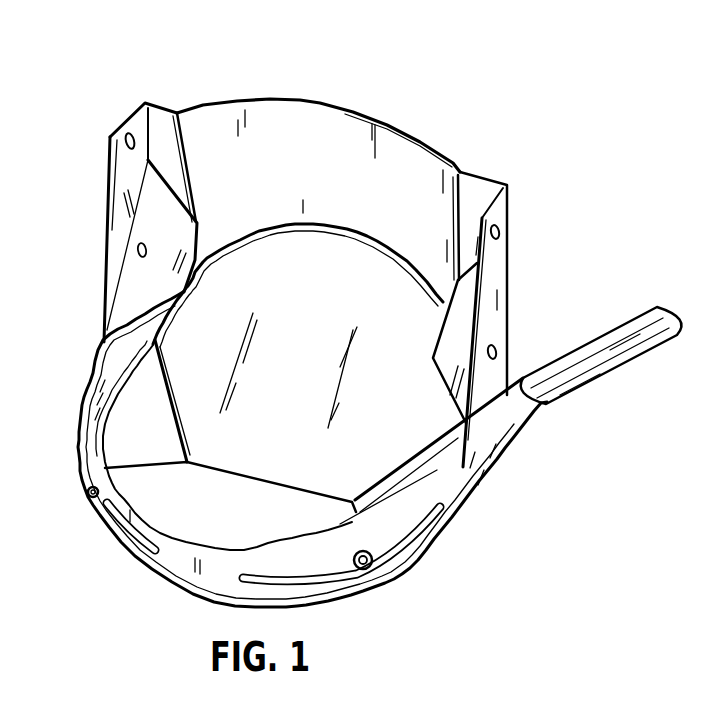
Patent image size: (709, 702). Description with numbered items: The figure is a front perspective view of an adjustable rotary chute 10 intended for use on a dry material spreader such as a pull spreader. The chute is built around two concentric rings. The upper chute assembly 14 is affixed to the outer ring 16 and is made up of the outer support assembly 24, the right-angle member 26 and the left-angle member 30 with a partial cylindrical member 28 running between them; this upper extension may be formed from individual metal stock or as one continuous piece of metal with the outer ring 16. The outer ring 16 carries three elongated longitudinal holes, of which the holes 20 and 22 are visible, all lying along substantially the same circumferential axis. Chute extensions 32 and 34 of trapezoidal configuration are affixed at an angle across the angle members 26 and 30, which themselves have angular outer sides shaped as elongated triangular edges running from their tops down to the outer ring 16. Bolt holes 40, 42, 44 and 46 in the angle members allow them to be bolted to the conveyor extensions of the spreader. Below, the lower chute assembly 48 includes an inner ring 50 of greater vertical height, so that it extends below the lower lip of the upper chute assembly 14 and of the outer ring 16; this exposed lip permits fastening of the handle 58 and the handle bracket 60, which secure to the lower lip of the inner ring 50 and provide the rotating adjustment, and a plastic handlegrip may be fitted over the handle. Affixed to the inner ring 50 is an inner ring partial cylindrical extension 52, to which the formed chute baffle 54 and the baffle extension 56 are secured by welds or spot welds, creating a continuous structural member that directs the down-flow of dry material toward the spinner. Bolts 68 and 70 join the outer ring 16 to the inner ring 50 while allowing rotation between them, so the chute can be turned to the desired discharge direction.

The adjustable rotary chute 10 is at (452, 58).
The upper chute assembly 14 is at (234, 223).
The outer ring 16 is at (400, 530).
The elongated longitudinal hole 20 is at (132, 548).
The elongated longitudinal hole 22 is at (340, 577).
The outer support assembly 24 is at (293, 99).
The right-angle member 26 is at (172, 140).
The partial cylindrical member 28 is at (317, 202).
The left-angle member 30 is at (485, 204).
The chute extension 32 is at (147, 296).
The chute extension 34 is at (458, 352).
The bolt hole 40 is at (125, 137).
The bolt hole 42 is at (146, 248).
The bolt hole 44 is at (500, 232).
The bolt hole 46 is at (497, 344).
The lower chute assembly 48 is at (277, 458).
The inner ring 50 is at (98, 451).
The inner ring partial cylindrical extension 52 is at (350, 248).
The formed chute baffle 54 is at (306, 372).
The baffle extension 56 is at (141, 411).
The handle 58 is at (617, 366).
The handle bracket 60 is at (512, 435).
The bolt 68 is at (88, 496).
The bolt 70 is at (373, 561).